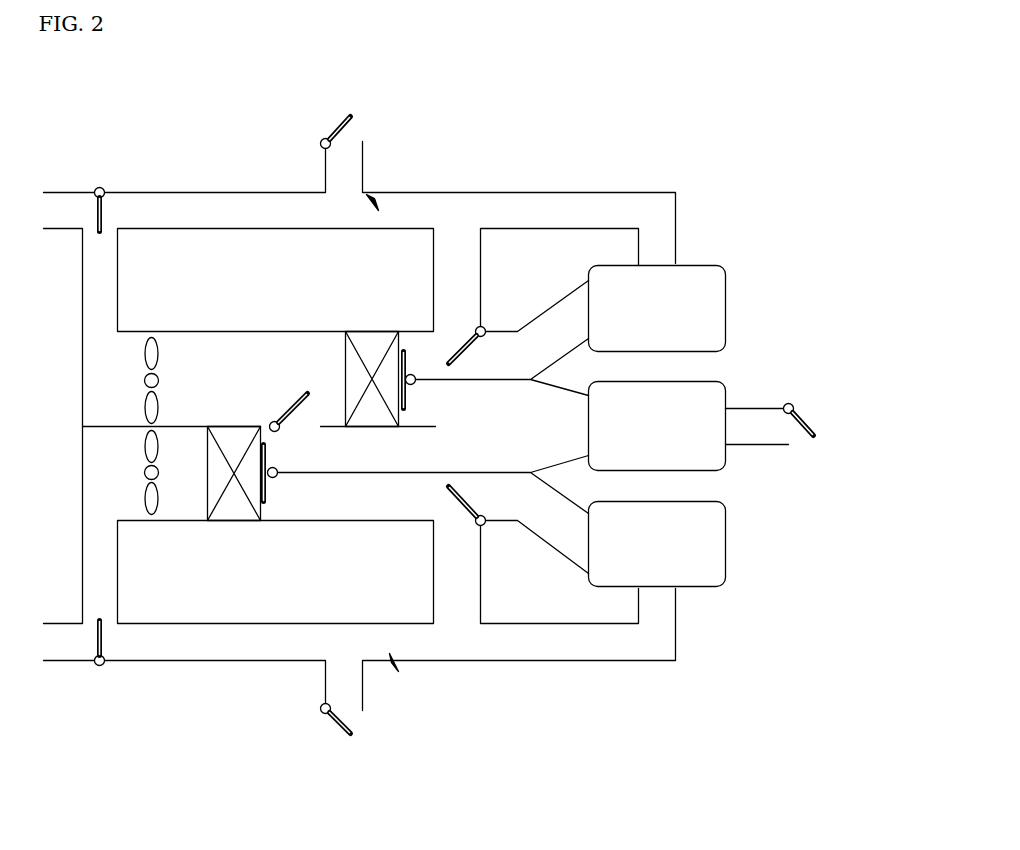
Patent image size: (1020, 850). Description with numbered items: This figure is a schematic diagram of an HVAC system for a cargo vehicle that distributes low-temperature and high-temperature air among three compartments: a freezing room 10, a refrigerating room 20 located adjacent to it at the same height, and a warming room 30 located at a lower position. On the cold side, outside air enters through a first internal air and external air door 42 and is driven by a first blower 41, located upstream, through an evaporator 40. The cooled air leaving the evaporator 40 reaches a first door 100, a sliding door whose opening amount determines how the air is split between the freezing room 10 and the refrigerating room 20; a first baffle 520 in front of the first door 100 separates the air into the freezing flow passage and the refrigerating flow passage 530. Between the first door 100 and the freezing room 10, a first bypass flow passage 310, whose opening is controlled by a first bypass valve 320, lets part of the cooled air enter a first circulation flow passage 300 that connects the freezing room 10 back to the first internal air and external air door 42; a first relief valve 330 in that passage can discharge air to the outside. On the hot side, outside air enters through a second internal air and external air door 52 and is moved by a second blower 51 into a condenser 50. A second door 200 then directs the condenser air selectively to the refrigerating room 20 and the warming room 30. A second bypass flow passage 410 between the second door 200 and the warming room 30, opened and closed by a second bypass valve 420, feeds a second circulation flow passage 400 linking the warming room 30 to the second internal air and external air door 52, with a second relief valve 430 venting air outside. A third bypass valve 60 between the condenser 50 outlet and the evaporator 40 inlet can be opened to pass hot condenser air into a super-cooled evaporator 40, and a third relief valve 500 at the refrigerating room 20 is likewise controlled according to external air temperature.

The freezing room 10 is at (708, 264).
The refrigerating room 20 is at (720, 383).
The warming room 30 is at (725, 540).
The evaporator 40 is at (368, 345).
The first blower 41 is at (157, 355).
The first internal air and external air door 42 is at (96, 214).
The condenser 50 is at (232, 510).
The second blower 51 is at (157, 493).
The second internal air and external air door 52 is at (98, 640).
The third bypass valve 60 is at (290, 400).
The first door 100 is at (408, 355).
The second door 200 is at (273, 490).
The first circulation flow passage 300 is at (374, 198).
The first bypass flow passage 310 is at (433, 262).
The first bypass valve 320 is at (475, 350).
The first relief valve 330 is at (335, 125).
The second circulation flow passage 400 is at (393, 675).
The second bypass flow passage 410 is at (433, 598).
The second bypass valve 420 is at (485, 510).
The second relief valve 430 is at (338, 727).
The third relief valve 500 is at (805, 418).
The first baffle 520 is at (522, 378).
The refrigerating flow passage 530 is at (416, 478).